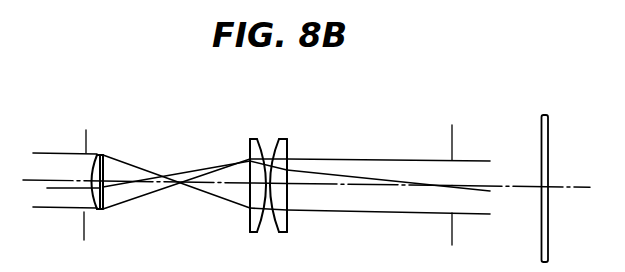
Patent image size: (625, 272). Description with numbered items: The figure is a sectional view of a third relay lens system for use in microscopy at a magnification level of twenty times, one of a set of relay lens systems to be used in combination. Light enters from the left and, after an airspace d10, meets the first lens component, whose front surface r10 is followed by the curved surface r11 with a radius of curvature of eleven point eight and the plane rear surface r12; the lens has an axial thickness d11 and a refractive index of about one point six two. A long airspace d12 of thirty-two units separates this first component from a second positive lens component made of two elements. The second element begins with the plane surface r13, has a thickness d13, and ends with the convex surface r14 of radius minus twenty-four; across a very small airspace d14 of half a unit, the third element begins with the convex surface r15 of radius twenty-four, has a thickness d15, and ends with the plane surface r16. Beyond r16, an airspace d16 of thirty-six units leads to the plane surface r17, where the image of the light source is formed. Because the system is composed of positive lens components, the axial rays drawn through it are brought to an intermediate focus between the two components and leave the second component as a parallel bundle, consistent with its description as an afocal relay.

The airspace d10 is at (89, 181).
The lens thickness d11 is at (104, 158).
The airspace d12 is at (191, 182).
The lens thickness d13 is at (250, 158).
The airspace d14 is at (270, 160).
The lens thickness d15 is at (287, 157).
The airspace d16 is at (368, 185).
The lens surface r10 is at (84, 226).
The lens surface r11 is at (94, 208).
The lens surface r12 is at (105, 198).
The lens surface r13 is at (250, 215).
The lens surface r14 is at (258, 227).
The lens surface r15 is at (277, 227).
The lens surface r16 is at (288, 222).
The light source image surface r17 is at (452, 237).